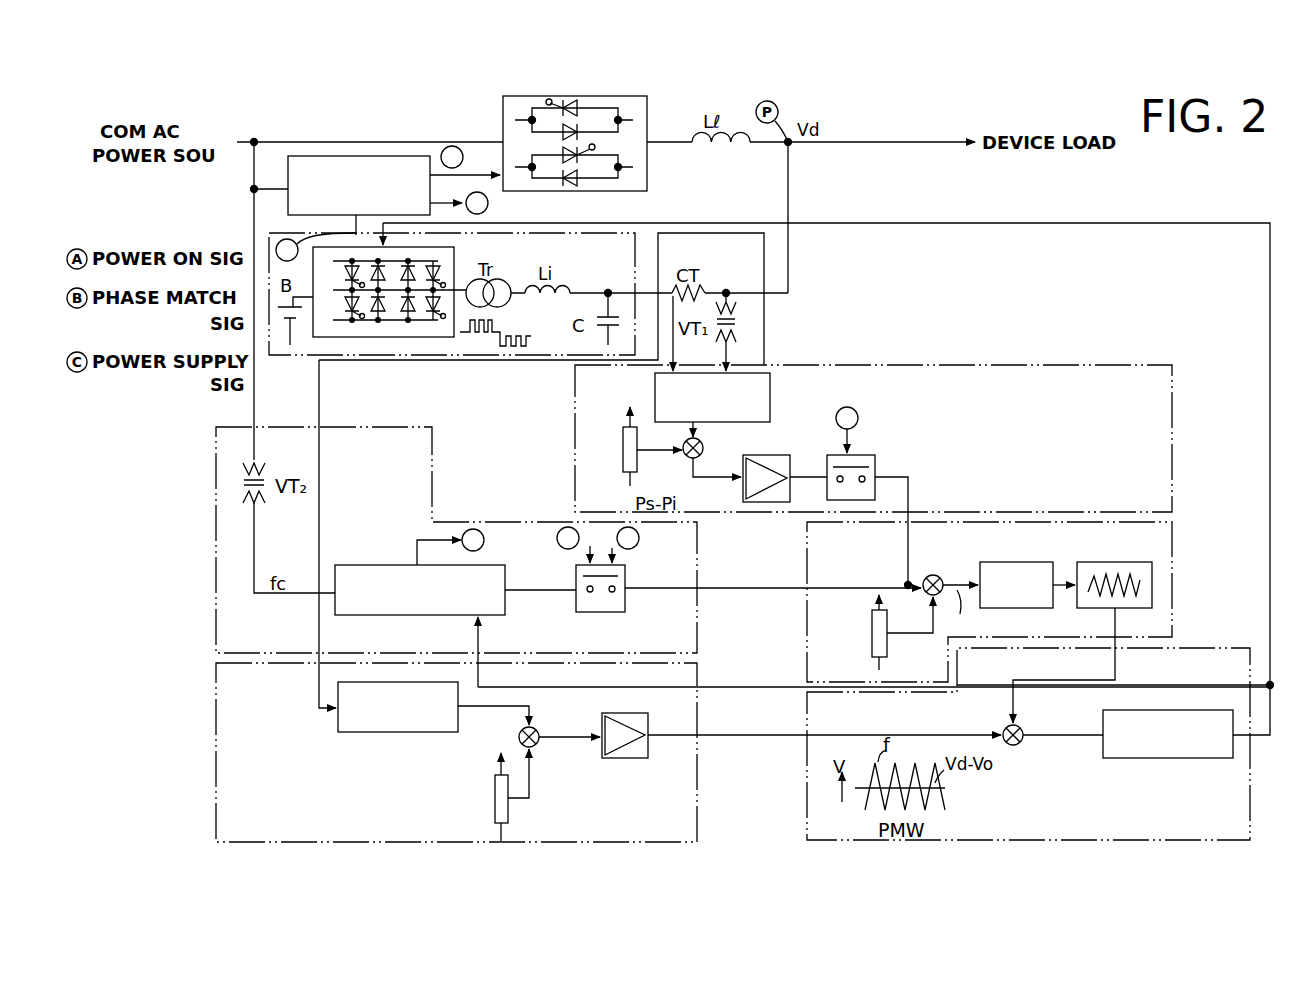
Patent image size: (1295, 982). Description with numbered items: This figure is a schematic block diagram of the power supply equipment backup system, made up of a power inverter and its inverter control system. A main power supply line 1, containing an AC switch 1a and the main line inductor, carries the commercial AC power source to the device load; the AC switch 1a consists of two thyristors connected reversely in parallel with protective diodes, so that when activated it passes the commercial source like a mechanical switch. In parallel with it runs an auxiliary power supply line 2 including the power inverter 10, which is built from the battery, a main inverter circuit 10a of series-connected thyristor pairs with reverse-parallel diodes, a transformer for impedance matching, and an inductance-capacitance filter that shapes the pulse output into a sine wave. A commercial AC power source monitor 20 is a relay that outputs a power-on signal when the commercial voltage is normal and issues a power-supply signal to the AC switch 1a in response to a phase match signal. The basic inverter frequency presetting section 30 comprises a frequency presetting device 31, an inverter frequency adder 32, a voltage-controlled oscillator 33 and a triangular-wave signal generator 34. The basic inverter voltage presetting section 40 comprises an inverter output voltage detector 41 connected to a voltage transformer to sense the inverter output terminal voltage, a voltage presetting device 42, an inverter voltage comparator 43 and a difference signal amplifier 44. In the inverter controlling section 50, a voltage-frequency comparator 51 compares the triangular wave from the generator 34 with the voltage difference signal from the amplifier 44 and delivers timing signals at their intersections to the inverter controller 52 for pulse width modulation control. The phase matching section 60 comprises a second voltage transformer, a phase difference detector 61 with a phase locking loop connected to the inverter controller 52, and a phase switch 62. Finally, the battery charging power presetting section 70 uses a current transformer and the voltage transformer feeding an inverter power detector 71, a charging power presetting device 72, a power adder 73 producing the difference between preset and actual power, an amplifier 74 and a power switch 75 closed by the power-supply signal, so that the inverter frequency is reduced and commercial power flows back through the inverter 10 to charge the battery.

The main power supply line 1 is at (360, 142).
The AC switch 1a is at (647, 122).
The auxiliary power supply line 2 is at (788, 197).
The power inverter 10 is at (290, 233).
The main inverter circuit 10a is at (454, 260).
The commercial AC power source monitor 20 is at (331, 156).
The basic inverter frequency presetting section 30 is at (1172, 545).
The basic inverter frequency presetting device 31 is at (871, 633).
The inverter frequency adder 32 is at (940, 578).
The voltage-controlled oscillator 33 is at (1015, 562).
The triangular-wave signal generator 34 is at (1118, 555).
The basic inverter voltage presetting section 40 is at (216, 735).
The inverter output voltage detector 41 is at (338, 708).
The basic inverter voltage presetting device 42 is at (495, 790).
The inverter voltage comparator 43 is at (536, 746).
The inverter voltage difference signal amplifier 44 is at (632, 758).
The inverter controlling section 50 is at (1030, 840).
The inverter voltage-frequency comparator 51 is at (1020, 744).
The inverter controller 52 is at (1180, 758).
The phase matching section 60 is at (372, 427).
The phase difference detector 61 is at (390, 565).
The phase switch 62 is at (576, 579).
The battery charging power presetting section 70 is at (940, 365).
The inverter power detector 71 is at (770, 393).
The battery charging power presetting device 72 is at (623, 433).
The battery charging power adder 73 is at (703, 448).
The power difference signal amplifier 74 is at (777, 462).
The power switch 75 is at (877, 469).